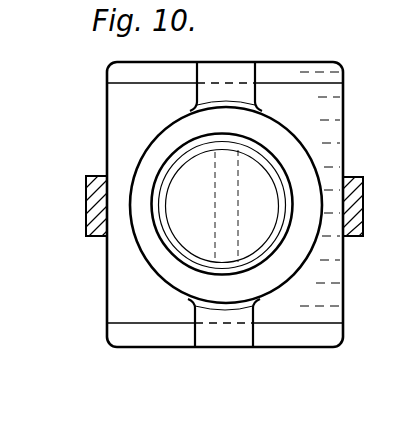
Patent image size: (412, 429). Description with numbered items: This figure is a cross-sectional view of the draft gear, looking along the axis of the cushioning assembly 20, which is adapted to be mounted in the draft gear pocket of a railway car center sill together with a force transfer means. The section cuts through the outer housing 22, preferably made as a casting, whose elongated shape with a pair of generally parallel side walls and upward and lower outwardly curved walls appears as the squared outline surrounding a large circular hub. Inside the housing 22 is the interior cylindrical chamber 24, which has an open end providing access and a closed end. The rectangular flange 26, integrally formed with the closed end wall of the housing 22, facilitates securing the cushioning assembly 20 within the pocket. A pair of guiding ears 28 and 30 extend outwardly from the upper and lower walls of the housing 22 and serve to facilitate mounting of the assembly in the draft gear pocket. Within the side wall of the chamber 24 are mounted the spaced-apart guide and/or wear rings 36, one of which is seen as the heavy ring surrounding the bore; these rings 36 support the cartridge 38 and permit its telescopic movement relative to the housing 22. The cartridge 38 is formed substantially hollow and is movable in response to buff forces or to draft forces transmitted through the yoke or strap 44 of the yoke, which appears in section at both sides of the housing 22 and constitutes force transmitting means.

The cushioning assembly 20 is at (234, 47).
The outer housing 22 is at (118, 126).
The interior cylindrical chamber 24 is at (166, 187).
The rectangular flange 26 is at (117, 76).
The guiding ear 28 is at (244, 78).
The guiding ear 30 is at (219, 338).
The guide and/or wear ring 36 is at (284, 174).
The cartridge 38 is at (175, 225).
The yoke or strap 44 is at (86, 199).